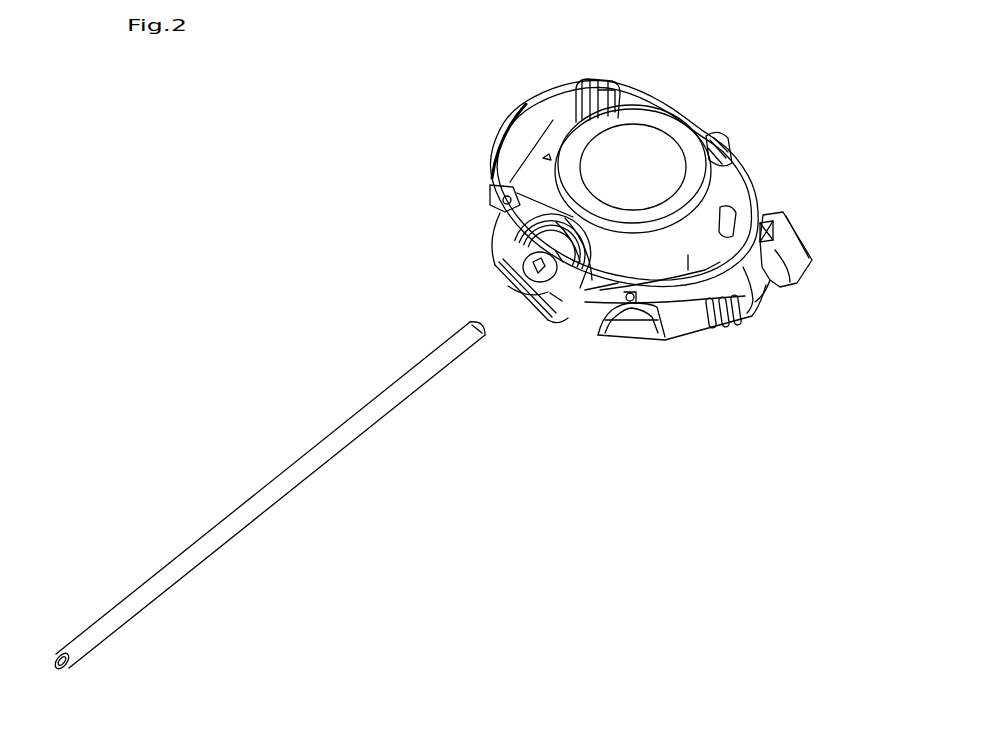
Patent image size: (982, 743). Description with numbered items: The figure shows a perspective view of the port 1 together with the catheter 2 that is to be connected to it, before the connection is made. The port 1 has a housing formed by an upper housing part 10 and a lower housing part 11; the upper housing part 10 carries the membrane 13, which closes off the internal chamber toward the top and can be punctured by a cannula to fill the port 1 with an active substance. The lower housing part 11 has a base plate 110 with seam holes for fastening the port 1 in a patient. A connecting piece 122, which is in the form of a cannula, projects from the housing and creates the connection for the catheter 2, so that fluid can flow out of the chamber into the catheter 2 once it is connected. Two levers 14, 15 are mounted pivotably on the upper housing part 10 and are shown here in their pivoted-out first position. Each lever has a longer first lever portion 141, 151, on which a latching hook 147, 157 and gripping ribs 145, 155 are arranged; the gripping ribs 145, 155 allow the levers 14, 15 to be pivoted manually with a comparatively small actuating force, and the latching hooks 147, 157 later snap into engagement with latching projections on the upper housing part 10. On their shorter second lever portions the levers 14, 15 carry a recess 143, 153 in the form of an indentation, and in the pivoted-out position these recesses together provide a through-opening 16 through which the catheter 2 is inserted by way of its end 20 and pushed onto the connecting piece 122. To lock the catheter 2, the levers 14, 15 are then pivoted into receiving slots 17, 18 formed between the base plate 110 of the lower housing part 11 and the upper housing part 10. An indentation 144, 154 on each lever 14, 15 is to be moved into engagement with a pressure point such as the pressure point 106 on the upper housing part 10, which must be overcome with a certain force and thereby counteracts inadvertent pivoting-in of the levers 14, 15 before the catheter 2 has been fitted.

The port 1 is at (553, 465).
The catheter 2 is at (275, 497).
The upper housing part 10 is at (720, 177).
The lower housing part 11 is at (752, 190).
The membrane 13 is at (652, 153).
The lever 14 is at (593, 320).
The lever 15 is at (503, 243).
The through-opening 16 is at (533, 269).
The receiving slot 17 is at (686, 261).
The receiving slot 18 is at (546, 154).
The end 20 is at (479, 340).
The pressure point 106 is at (573, 217).
The base plate 110 is at (547, 320).
The connecting piece 122 is at (508, 286).
The first lever portion 141 is at (790, 250).
The recess 143 is at (550, 293).
The indentation 144 is at (633, 303).
The gripping ribs 145 is at (731, 325).
The latching hook 147 is at (783, 212).
The first lever portion 151 is at (563, 110).
The recess 153 is at (562, 255).
The indentation 154 is at (500, 203).
The gripping ribs 155 is at (510, 140).
The latching hook 157 is at (588, 100).